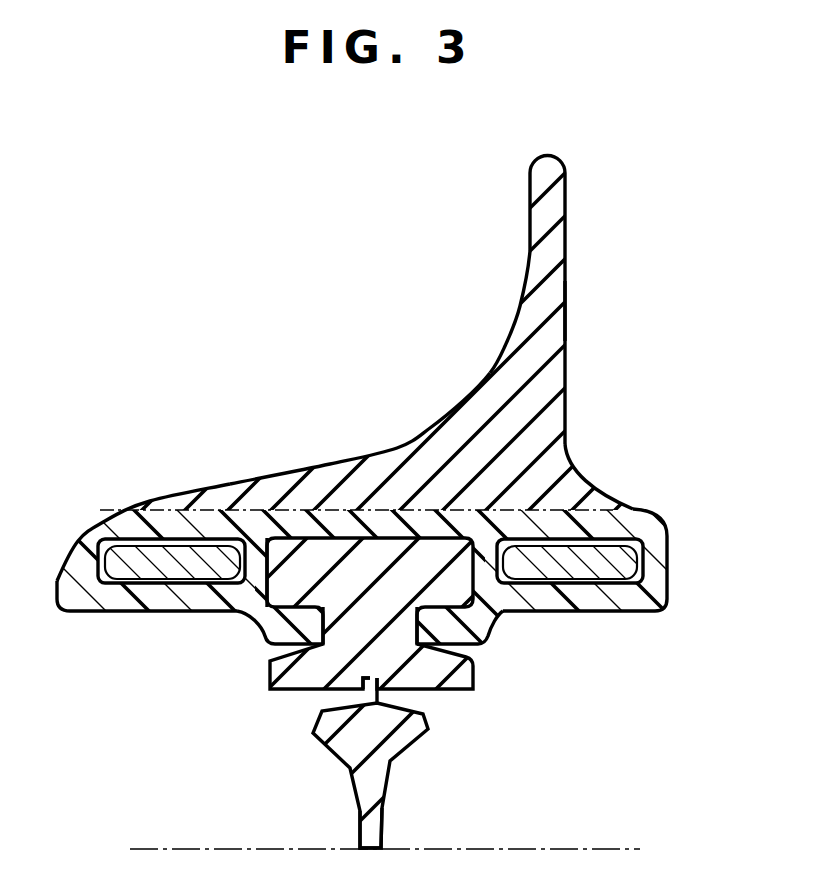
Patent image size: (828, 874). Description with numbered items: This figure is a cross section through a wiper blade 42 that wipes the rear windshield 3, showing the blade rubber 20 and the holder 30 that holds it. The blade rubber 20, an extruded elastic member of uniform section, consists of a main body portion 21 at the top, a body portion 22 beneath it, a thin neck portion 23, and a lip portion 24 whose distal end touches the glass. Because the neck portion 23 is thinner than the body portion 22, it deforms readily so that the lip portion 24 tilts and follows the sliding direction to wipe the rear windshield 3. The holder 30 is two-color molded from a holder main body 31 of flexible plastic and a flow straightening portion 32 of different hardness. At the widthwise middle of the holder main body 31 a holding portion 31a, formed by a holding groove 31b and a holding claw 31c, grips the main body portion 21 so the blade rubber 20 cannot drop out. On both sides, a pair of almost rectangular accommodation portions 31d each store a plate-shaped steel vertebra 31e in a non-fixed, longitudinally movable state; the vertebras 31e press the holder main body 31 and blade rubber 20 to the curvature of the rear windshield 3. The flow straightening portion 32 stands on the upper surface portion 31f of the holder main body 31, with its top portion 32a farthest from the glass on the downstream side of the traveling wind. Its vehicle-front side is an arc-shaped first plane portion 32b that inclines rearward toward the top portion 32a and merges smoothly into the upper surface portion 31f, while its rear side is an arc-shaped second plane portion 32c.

The rear windshield 3 is at (596, 846).
The blade rubber 20 is at (407, 755).
The main body portion 21 is at (308, 562).
The body portion 22 is at (373, 618).
The neck portion 23 is at (364, 679).
The lip portion 24 is at (362, 828).
The holder 30 is at (395, 442).
The holder main body 31 is at (554, 595).
The holding portion 31a is at (280, 578).
The holding groove 31b is at (446, 590).
The holding claw 31c is at (297, 624).
The accommodation portion 31d is at (120, 538).
The vertebra 31e is at (157, 577).
The upper surface portion 31f is at (177, 492).
The flow straightening portion 32 is at (545, 388).
The top portion 32a is at (550, 170).
The first plane portion 32b is at (497, 362).
The second plane portion 32c is at (595, 487).
The wiper blade 42 is at (593, 302).